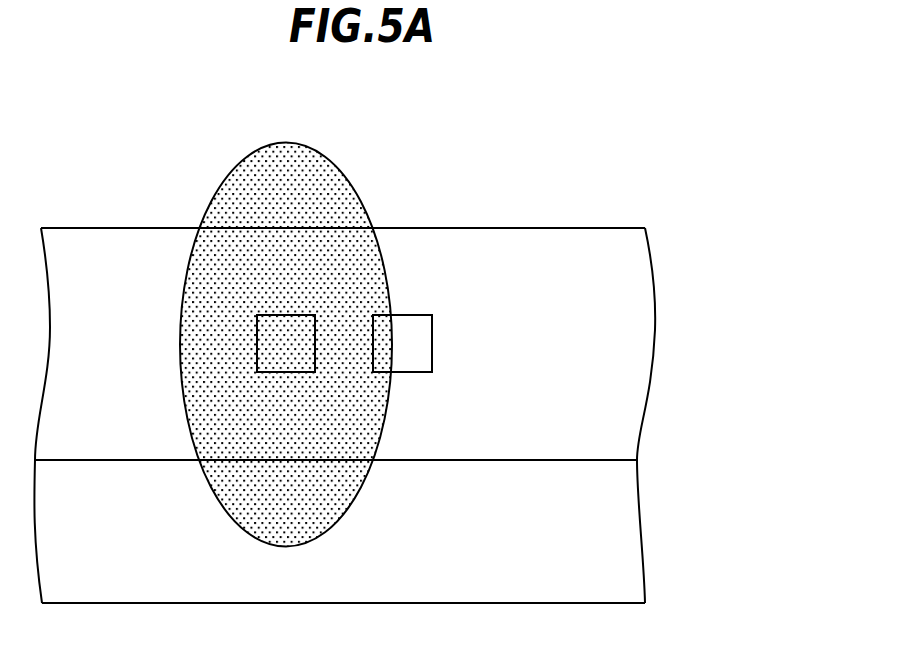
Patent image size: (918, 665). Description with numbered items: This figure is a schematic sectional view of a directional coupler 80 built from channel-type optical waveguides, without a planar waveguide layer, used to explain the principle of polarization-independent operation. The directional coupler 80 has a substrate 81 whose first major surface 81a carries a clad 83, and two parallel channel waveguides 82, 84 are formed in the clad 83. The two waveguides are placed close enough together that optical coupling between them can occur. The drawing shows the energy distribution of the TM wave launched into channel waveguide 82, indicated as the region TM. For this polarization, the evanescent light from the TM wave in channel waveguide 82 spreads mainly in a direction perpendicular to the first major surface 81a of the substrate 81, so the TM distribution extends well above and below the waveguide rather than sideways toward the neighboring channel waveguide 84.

The directional coupler 80 is at (368, 375).
The substrate 81 is at (620, 540).
The first major surface 81a is at (557, 449).
The channel waveguide 82 is at (286, 360).
The clad 83 is at (631, 337).
The channel waveguide 84 is at (407, 360).
The TM wave distribution TM is at (286, 141).